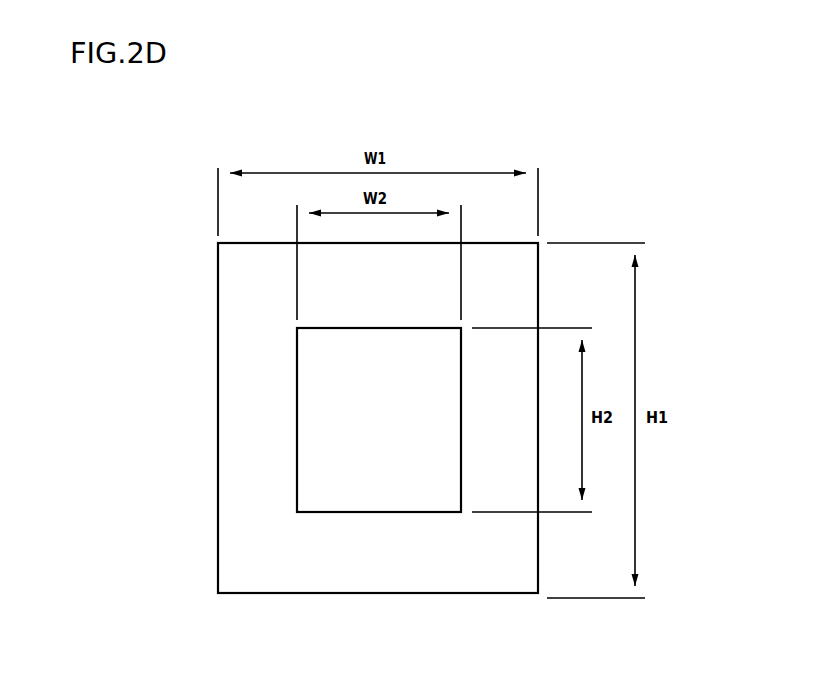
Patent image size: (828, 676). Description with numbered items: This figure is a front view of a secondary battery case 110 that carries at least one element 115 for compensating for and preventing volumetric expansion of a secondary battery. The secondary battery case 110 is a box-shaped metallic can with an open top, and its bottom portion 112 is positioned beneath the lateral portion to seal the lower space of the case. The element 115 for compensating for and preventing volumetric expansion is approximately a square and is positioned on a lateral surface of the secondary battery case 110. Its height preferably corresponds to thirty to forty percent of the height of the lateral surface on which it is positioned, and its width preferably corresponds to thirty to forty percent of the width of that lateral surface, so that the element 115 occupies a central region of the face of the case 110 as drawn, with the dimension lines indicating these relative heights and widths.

The secondary battery case 110 is at (612, 172).
The bottom portion 112 is at (247, 350).
The element for compensating for and preventing volumetric expansion 115 is at (338, 427).